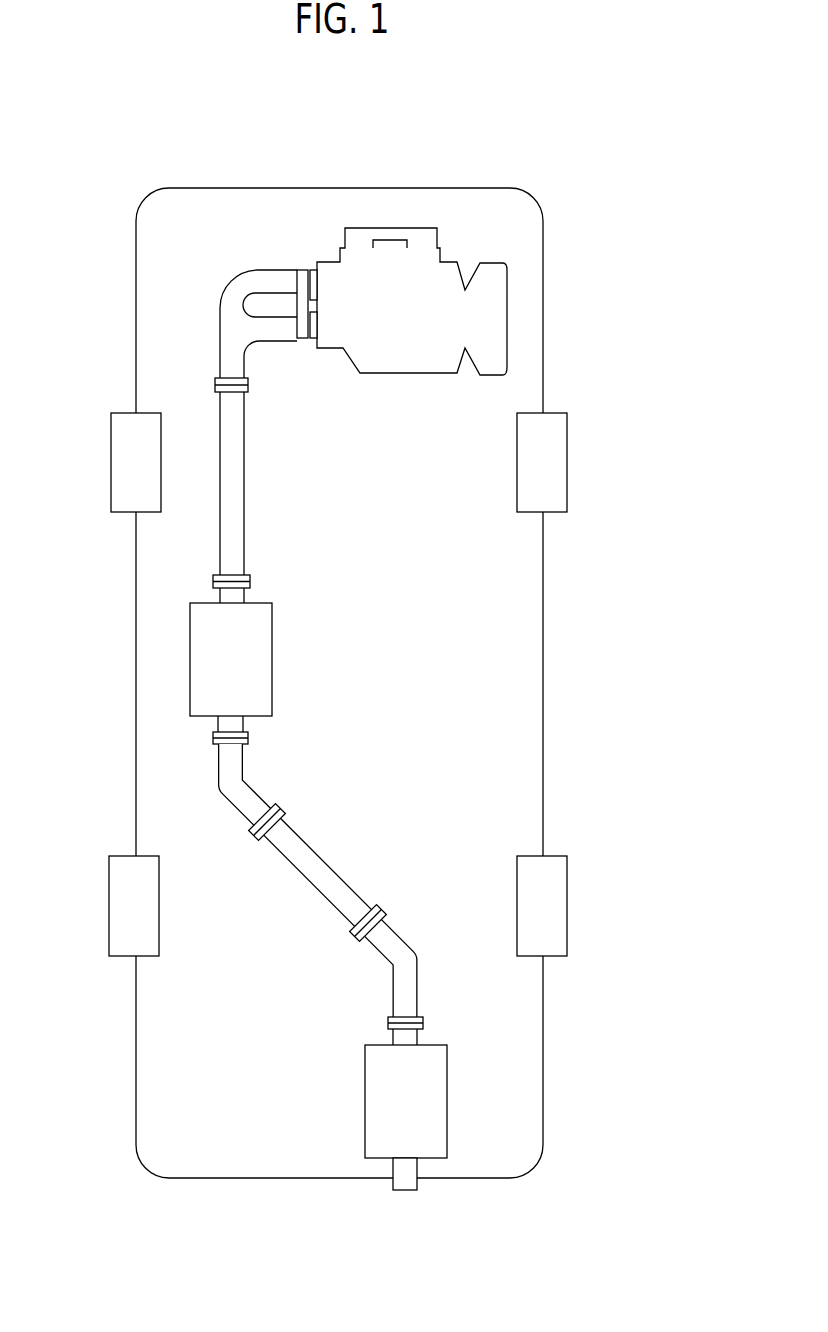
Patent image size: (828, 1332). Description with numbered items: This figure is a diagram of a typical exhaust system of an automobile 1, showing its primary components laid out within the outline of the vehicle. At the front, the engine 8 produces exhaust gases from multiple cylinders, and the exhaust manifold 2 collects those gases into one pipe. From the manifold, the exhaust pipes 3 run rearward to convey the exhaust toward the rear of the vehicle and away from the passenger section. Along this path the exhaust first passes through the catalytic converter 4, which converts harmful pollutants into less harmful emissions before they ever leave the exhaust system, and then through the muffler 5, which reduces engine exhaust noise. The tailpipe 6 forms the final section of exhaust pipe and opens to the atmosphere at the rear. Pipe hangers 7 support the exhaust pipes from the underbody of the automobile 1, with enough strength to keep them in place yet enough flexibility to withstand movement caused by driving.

The automobile 1 is at (586, 219).
The exhaust manifold 2 is at (217, 314).
The exhaust pipes 3 is at (397, 937).
The catalytic converter 4 is at (190, 678).
The muffler 5 is at (442, 1093).
The tailpipe 6 is at (415, 1188).
The pipe hangers 7 is at (348, 935).
The engine 8 is at (505, 314).